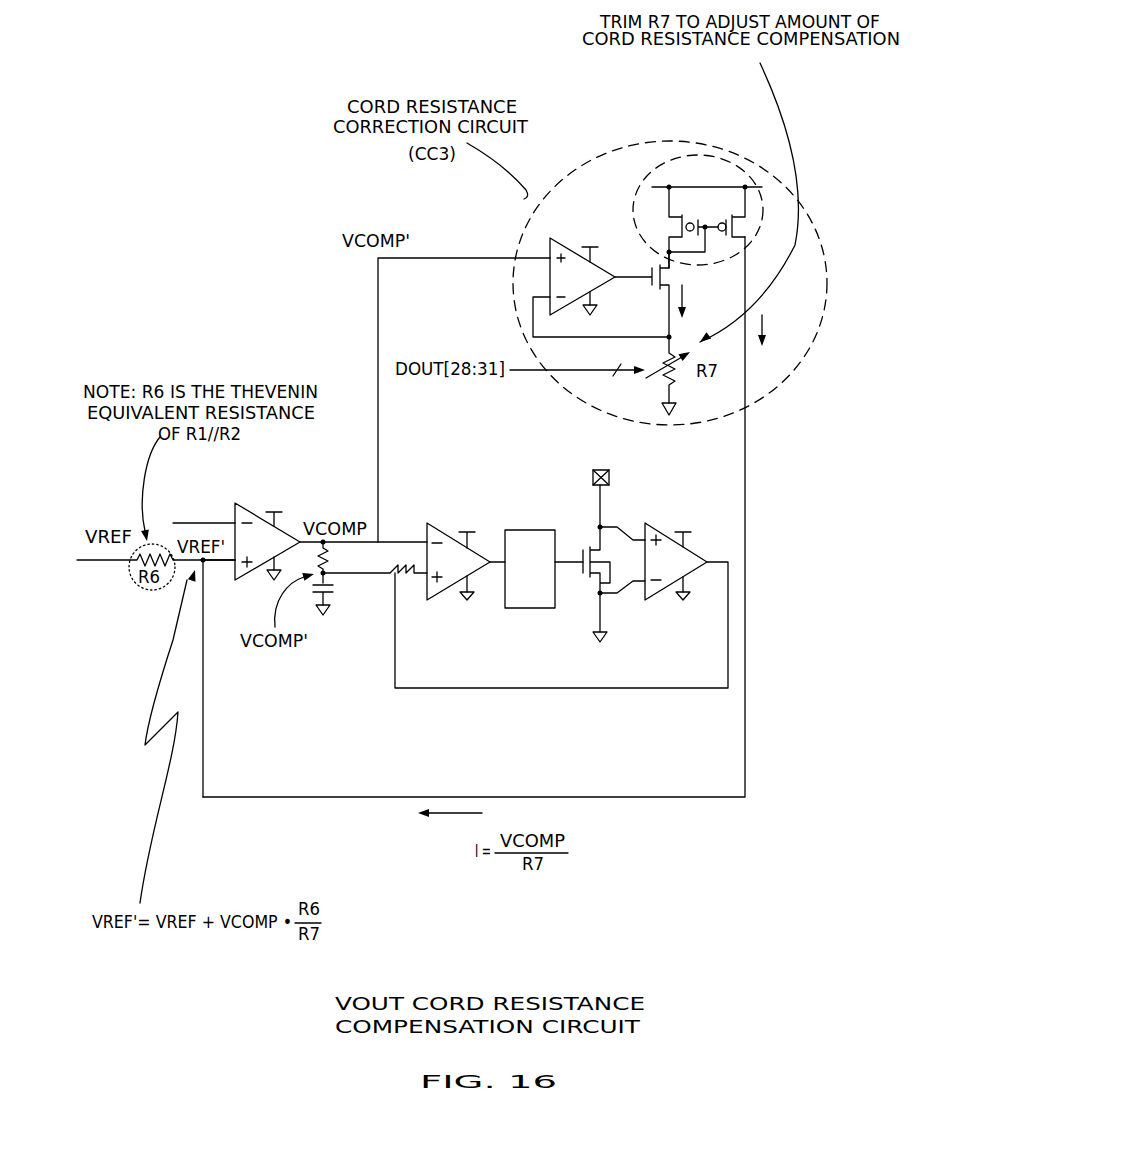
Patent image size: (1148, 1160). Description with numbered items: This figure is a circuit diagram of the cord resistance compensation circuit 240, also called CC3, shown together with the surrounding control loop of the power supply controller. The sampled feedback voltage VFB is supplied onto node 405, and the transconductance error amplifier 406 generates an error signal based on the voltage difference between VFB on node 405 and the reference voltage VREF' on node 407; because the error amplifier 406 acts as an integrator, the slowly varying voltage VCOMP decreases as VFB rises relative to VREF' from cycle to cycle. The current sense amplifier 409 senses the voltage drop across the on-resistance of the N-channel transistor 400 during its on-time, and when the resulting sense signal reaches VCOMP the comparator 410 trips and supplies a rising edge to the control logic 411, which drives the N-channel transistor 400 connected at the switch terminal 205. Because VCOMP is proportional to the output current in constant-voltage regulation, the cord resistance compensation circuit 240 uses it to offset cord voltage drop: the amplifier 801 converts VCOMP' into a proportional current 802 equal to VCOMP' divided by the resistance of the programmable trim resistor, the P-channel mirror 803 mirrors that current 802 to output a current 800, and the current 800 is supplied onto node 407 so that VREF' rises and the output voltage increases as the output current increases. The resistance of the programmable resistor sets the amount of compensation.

The cord resistance compensation circuit 240 is at (607, 148).
The P-channel mirror 803 is at (643, 178).
The amplifier 801 is at (582, 285).
The current 802 is at (686, 293).
The current 800 is at (767, 323).
The node 405 is at (210, 523).
The transconductance error amplifier 406 is at (277, 551).
The node 407 is at (220, 563).
The comparator 410 is at (468, 568).
The control logic 411 is at (543, 568).
The current sense amplifier 409 is at (683, 568).
The N-channel transistor 400 is at (594, 591).
The switch terminal SW 205 is at (598, 468).